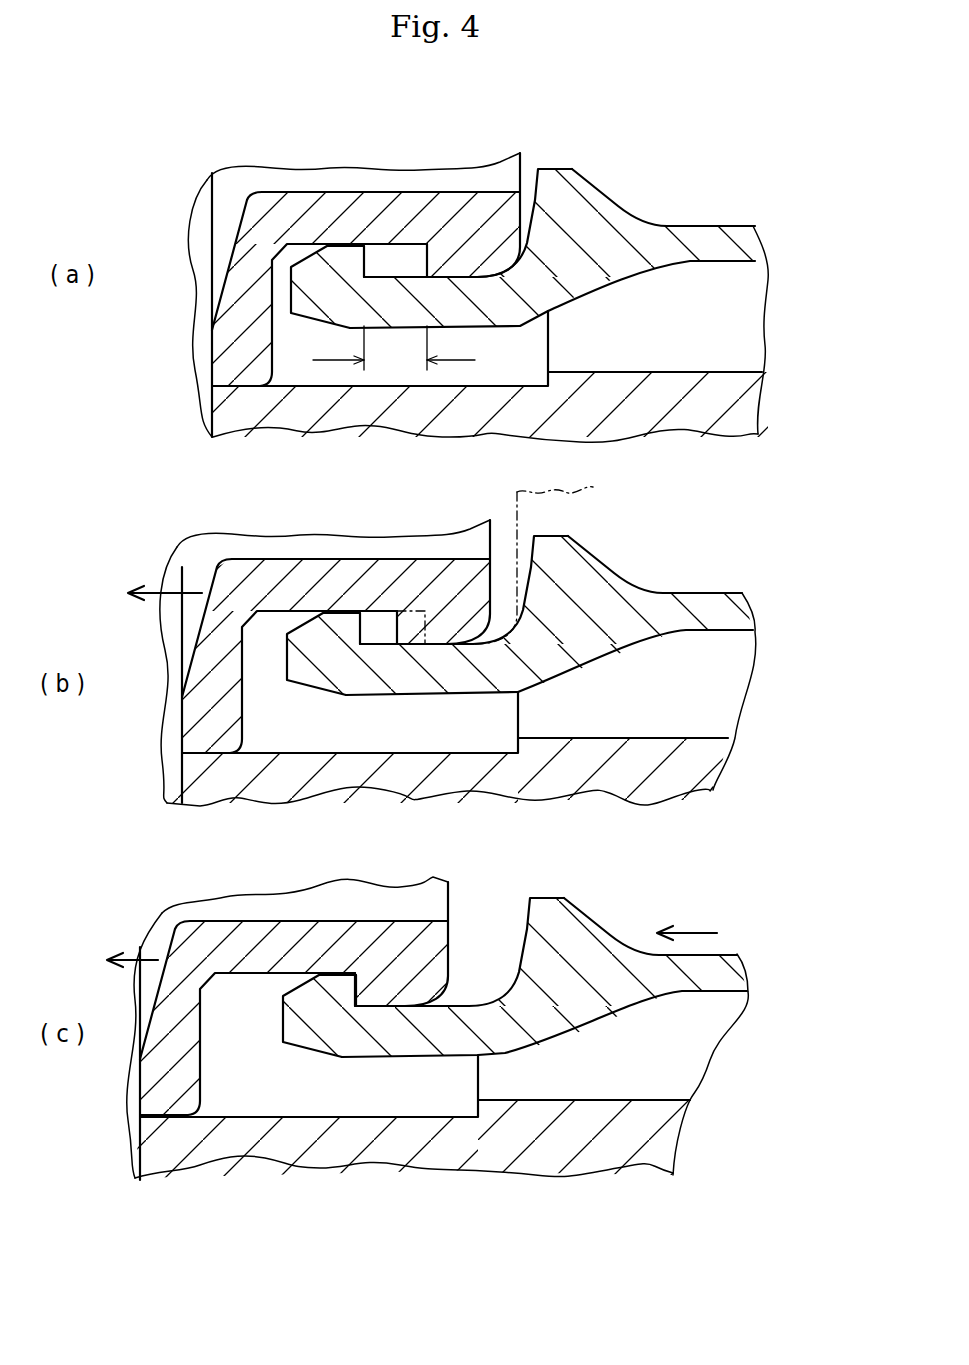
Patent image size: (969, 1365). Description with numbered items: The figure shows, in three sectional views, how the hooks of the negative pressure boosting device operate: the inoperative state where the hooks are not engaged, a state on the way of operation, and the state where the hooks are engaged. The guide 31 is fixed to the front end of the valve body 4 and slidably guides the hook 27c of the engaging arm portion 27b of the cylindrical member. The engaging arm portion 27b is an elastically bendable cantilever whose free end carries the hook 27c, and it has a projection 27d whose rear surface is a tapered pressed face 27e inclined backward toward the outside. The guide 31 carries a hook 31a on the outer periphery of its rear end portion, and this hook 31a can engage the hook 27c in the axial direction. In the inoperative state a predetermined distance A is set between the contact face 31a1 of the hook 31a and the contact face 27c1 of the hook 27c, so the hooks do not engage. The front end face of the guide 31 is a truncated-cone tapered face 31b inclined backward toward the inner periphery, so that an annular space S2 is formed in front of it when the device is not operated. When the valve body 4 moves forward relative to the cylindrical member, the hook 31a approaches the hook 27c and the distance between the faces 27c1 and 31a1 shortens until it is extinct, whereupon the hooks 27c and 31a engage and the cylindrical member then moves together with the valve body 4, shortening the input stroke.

The guide 31 is at (300, 207).
The hook 31a is at (463, 255).
The contact face 31a1 is at (418, 262).
The tapered face 31b is at (233, 215).
The engaging arm portion 27b is at (725, 247).
The hook 27c is at (348, 267).
The contact face 27c1 is at (365, 262).
The projection 27d is at (558, 192).
The pressed face 27e is at (600, 190).
The valve body 4 is at (707, 392).
The annular space S2 is at (225, 240).
The predetermined distance A is at (394, 350).